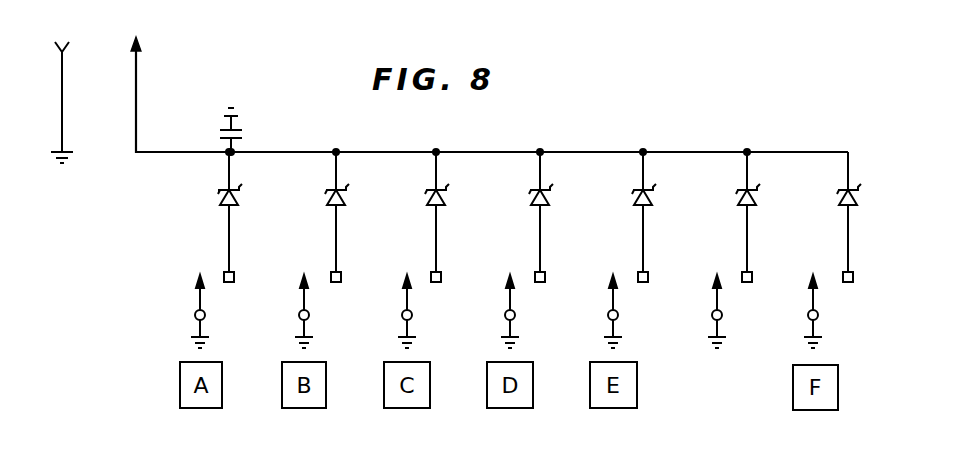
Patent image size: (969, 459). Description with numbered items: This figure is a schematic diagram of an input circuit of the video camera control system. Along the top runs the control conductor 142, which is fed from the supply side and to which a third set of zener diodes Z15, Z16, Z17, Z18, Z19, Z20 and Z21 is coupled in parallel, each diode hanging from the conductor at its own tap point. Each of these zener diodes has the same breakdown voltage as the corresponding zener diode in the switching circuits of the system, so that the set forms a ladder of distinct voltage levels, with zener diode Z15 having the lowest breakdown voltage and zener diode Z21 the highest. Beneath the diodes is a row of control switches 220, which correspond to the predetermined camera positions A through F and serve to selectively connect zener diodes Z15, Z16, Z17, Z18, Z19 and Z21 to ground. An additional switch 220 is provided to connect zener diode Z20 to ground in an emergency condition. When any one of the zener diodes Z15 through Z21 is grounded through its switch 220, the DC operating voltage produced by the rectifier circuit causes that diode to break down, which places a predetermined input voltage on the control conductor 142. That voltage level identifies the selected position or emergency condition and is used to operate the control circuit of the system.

The control conductor 142 is at (137, 73).
The control switch 220 is at (200, 301).
The zener diode Z15 is at (219, 192).
The zener diode Z16 is at (326, 192).
The zener diode Z17 is at (426, 192).
The zener diode Z18 is at (530, 192).
The zener diode Z19 is at (633, 192).
The zener diode Z20 is at (737, 192).
The zener diode Z21 is at (838, 192).